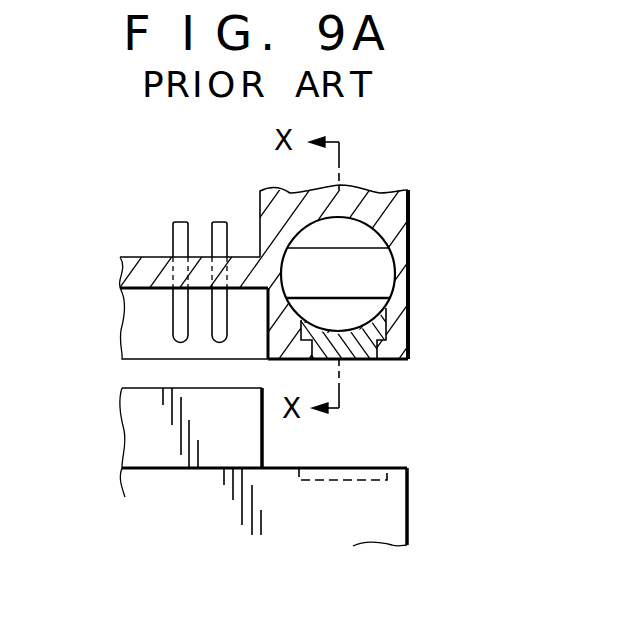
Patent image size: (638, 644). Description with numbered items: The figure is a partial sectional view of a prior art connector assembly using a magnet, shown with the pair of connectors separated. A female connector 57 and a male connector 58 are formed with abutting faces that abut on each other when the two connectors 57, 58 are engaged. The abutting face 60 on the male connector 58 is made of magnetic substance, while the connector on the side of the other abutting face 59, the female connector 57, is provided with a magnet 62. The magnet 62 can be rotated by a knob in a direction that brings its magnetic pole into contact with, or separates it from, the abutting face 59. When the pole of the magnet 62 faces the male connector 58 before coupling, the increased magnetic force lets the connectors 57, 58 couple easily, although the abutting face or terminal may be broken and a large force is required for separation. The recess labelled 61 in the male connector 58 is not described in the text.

The female connector 57 is at (410, 218).
The magnet 62 is at (392, 275).
The abutting face 59 is at (388, 360).
The abutting face 60 is at (394, 467).
The male connector 58 is at (410, 513).
The recess 61 is at (347, 470).